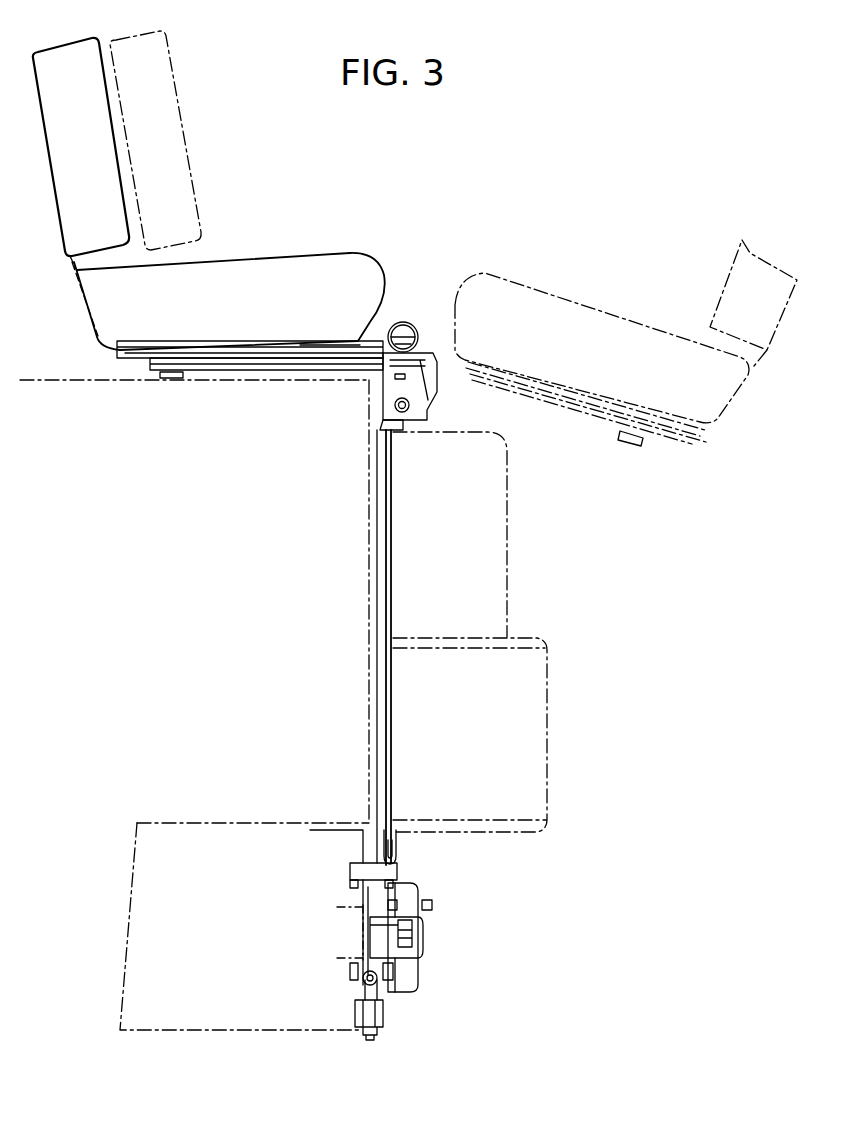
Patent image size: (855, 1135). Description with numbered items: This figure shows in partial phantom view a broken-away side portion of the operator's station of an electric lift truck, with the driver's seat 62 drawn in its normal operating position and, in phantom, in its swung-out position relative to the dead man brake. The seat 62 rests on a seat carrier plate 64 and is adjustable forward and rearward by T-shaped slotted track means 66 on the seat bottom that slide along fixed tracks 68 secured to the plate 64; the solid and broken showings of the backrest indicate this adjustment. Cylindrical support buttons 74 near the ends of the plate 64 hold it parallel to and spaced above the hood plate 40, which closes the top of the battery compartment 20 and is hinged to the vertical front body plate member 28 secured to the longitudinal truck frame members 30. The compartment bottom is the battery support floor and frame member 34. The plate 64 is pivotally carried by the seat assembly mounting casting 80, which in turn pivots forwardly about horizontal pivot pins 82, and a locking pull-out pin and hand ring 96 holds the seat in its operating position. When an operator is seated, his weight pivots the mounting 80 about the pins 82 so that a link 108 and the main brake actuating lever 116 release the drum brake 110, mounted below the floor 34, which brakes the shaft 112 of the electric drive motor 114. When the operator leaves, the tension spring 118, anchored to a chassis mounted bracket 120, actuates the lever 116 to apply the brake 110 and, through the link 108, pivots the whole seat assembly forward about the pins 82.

The battery compartment 20 is at (185, 595).
The front body plate member 28 is at (369, 582).
The longitudinal truck frame members 30 is at (448, 648).
The battery support floor and truck frame member 34 is at (267, 820).
The hood plate 40 is at (80, 383).
The seat 62 is at (320, 260).
The seat carrier plate 64 is at (327, 367).
The T-shaped slotted track means 66 is at (150, 353).
The fixed tracks 68 is at (130, 360).
The cylindrical support buttons 74 is at (177, 377).
The seat assembly mounting casting 80 is at (437, 392).
The horizontal pivot pins 82 is at (393, 410).
The locking pull-out pin and hand ring 96 is at (403, 322).
The link 108 is at (388, 570).
The drum brake 110 is at (428, 958).
The shaft 112 is at (383, 937).
The electric drive motor 114 is at (243, 1025).
The main brake actuating lever 116 is at (367, 860).
The tension spring 118 is at (353, 887).
The chassis mounted bracket 120 is at (382, 1015).